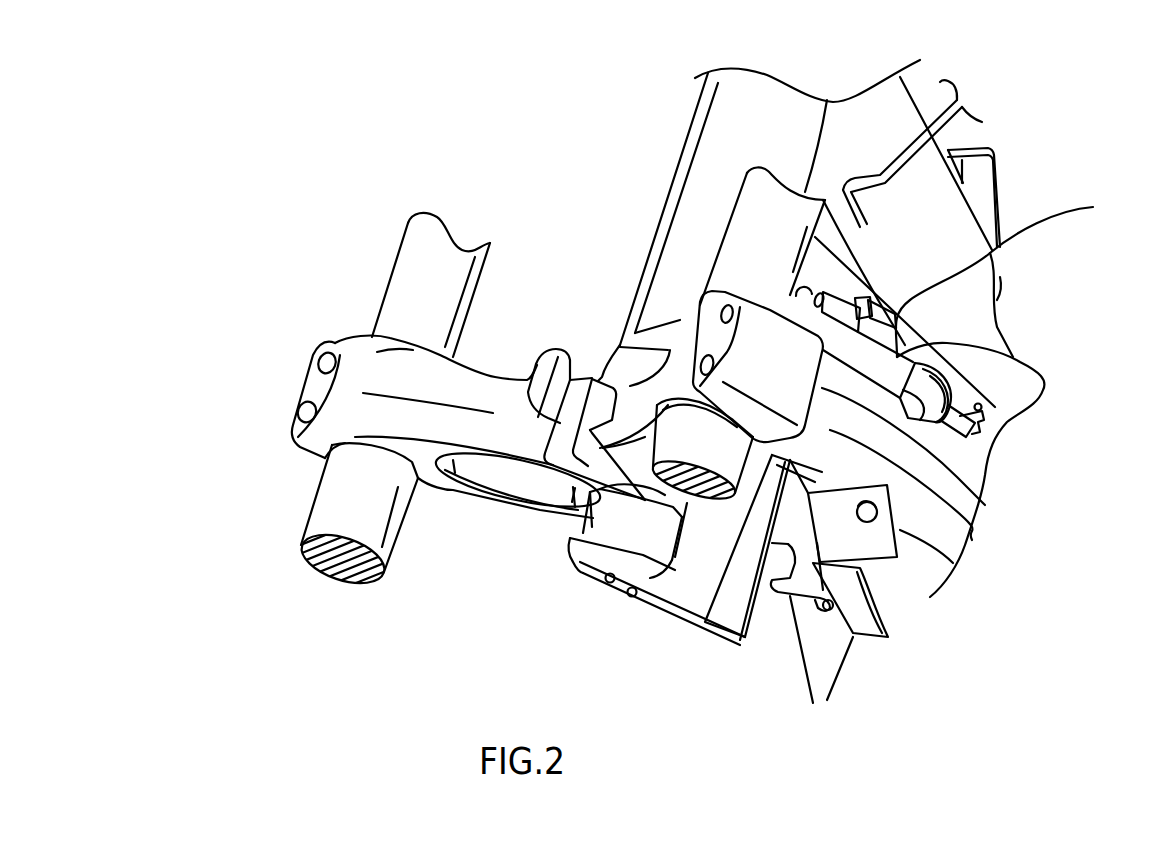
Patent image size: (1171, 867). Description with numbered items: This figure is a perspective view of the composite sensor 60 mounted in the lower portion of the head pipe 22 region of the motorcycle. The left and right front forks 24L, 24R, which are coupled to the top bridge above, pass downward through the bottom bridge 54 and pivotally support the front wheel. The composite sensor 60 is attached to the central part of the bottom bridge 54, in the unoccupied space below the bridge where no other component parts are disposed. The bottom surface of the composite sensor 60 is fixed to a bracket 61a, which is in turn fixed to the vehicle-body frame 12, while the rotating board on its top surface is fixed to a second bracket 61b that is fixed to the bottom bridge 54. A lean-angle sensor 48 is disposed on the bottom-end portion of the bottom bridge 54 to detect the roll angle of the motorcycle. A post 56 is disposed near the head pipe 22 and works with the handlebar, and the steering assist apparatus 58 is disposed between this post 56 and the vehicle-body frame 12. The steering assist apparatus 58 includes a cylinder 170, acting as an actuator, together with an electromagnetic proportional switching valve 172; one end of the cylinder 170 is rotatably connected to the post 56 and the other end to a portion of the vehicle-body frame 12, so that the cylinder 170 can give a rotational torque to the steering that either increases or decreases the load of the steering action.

The vehicle-body frame 12 is at (985, 447).
The head pipe 22 is at (722, 147).
The front fork (left) 24L is at (757, 210).
The front fork (right) 24R is at (405, 278).
The lean-angle sensor 48 is at (715, 528).
The bottom bridge 54 is at (503, 393).
The post 56 is at (813, 297).
The steering assist apparatus 58 is at (997, 334).
The composite sensor 60 is at (592, 525).
The bracket 61a is at (670, 613).
The bracket 61b is at (534, 377).
The cylinder 170 is at (1020, 359).
The electromagnetic proportional switching valve 172 is at (1000, 277).